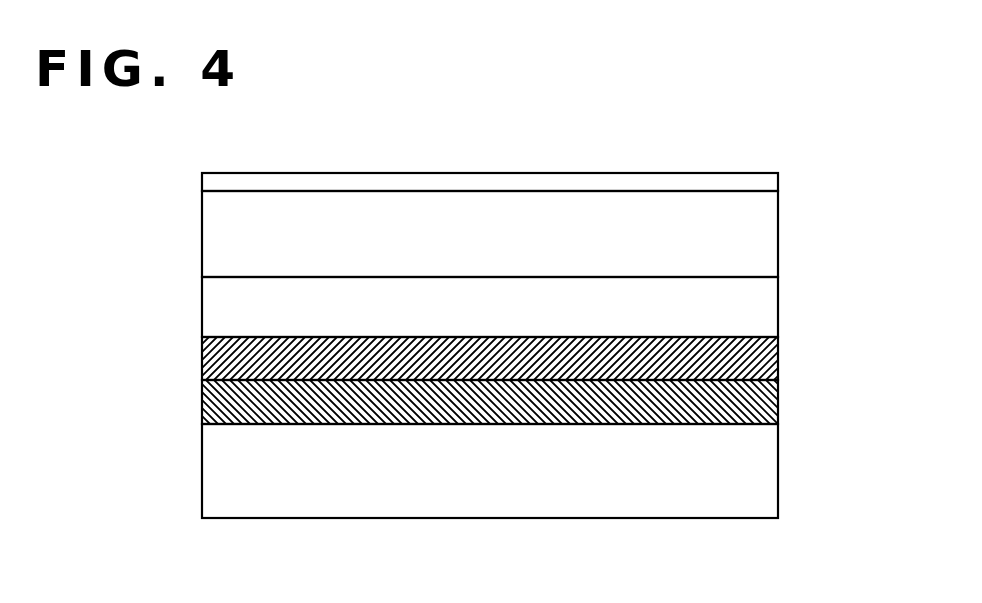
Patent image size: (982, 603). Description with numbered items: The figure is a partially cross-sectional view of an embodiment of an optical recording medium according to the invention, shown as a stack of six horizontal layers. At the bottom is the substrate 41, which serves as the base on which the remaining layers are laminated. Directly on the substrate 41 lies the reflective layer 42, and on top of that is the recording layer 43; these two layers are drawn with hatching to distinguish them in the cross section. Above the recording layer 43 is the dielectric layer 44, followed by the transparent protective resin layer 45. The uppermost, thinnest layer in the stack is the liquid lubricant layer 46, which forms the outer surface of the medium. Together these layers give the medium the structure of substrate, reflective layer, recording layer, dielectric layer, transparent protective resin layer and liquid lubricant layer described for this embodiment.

The substrate 41 is at (778, 458).
The reflective layer 42 is at (778, 398).
The recording layer 43 is at (778, 352).
The dielectric layer 44 is at (778, 300).
The transparent protective resin layer 45 is at (778, 230).
The liquid lubricant layer 46 is at (778, 175).